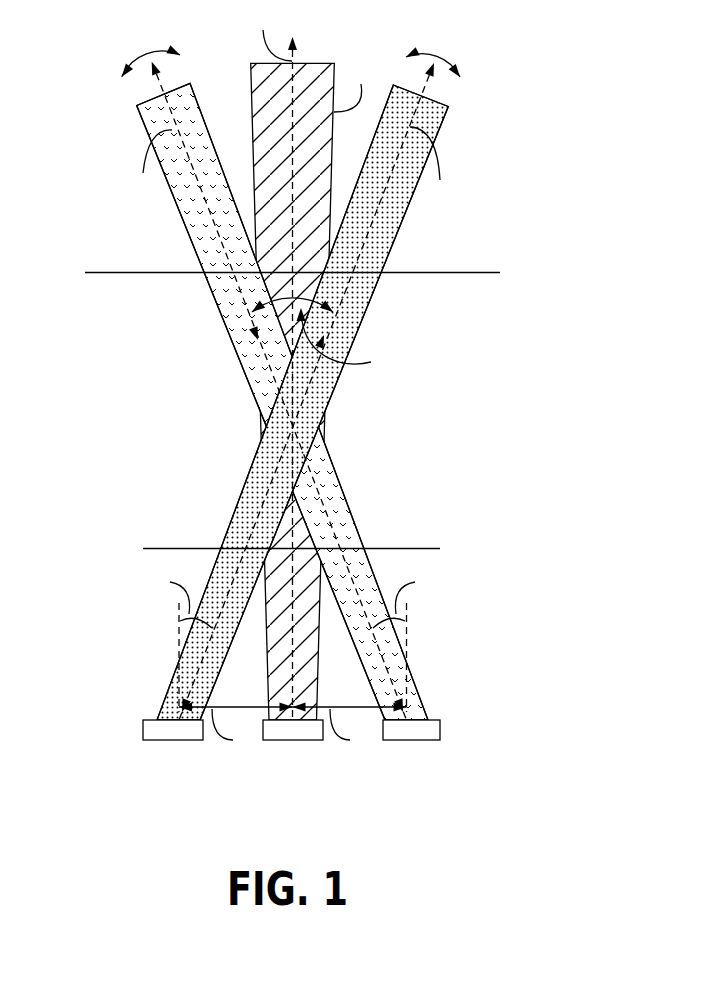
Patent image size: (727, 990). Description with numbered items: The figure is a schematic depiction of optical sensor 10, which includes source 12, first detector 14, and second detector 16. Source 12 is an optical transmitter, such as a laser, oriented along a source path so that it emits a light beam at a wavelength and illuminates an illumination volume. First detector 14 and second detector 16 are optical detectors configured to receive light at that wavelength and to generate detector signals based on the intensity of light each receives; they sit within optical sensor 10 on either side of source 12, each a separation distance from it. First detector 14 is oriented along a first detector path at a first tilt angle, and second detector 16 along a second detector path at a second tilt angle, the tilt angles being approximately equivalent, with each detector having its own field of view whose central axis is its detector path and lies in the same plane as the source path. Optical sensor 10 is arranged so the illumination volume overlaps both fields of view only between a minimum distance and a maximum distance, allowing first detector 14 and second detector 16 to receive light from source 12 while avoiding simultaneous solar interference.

The optical sensor 10 is at (309, 391).
The source 12 is at (285, 740).
The first detector 14 is at (152, 740).
The second detector 16 is at (420, 740).